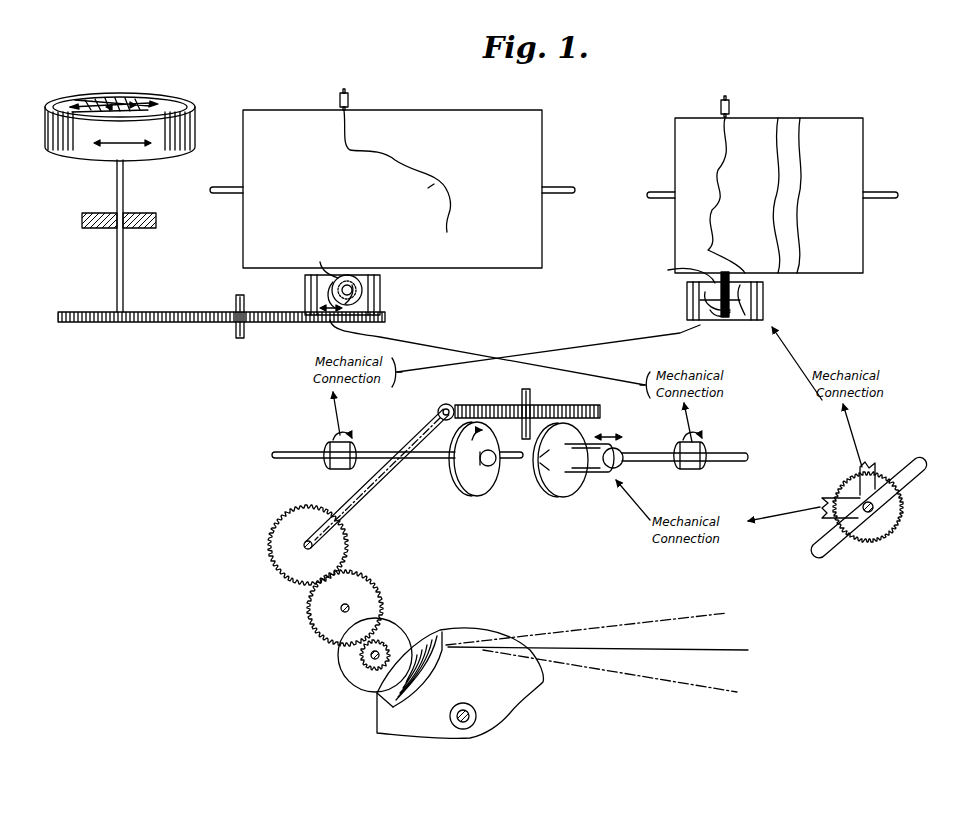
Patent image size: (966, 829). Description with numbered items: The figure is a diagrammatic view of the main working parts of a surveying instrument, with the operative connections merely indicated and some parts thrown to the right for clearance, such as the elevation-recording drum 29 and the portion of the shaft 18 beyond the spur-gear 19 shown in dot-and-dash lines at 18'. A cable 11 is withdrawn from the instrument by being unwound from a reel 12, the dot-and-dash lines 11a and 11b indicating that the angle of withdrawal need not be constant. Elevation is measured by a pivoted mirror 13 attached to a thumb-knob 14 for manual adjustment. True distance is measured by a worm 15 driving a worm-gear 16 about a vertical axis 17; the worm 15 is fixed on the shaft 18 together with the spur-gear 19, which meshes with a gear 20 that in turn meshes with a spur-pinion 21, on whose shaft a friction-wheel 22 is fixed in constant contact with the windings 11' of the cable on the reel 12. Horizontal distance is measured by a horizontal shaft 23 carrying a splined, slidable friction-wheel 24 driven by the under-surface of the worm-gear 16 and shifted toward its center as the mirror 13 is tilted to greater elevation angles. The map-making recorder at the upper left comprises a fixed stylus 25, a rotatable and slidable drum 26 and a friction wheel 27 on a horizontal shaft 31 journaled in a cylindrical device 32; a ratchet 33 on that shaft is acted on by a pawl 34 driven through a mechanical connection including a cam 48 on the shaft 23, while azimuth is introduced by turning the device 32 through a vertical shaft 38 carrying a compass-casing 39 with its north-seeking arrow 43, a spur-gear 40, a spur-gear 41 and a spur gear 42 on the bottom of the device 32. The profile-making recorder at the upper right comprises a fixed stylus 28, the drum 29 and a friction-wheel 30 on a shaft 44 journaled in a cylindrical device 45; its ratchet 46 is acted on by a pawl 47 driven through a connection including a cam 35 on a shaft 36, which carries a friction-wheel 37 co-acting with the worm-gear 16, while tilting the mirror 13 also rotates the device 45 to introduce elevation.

The cable 11 is at (617, 624).
The dot-and-dash line 11a is at (600, 628).
The dot-and-dash line 11b is at (612, 672).
The windings of the cable 11' is at (352, 723).
The reel 12 is at (493, 700).
The pivoted mirror 13 is at (905, 476).
The thumb-knob 14 is at (878, 540).
The worm 15 is at (452, 408).
The worm-gear 16 is at (600, 408).
The vertical axis 17 is at (531, 393).
The shaft 18 is at (377, 469).
The part of shaft shown in dot-and-dash lines 18' is at (400, 515).
The spur-gear 19 is at (283, 550).
The gear 20 is at (320, 614).
The spur-pinion 21 is at (358, 660).
The friction-wheel 22 is at (400, 642).
The horizontal shaft 23 is at (650, 452).
The friction-wheel 24 is at (552, 490).
The fixed stylus 25 is at (350, 90).
The drum 26 is at (472, 125).
The friction wheel 27 is at (320, 262).
The fixed stylus 28 is at (730, 102).
The drum 29 is at (803, 133).
The friction-wheel 30 is at (681, 273).
The horizontal shaft 31 is at (362, 290).
The cylindrical device 32 is at (383, 300).
The ratchet 33 is at (352, 280).
The pawl 34 is at (333, 295).
The cam 35 is at (352, 448).
The shaft 36 is at (425, 470).
The friction-wheel 37 is at (478, 490).
The vertical shaft 38 is at (117, 262).
The compass-casing 39 is at (86, 150).
The spur-gear 40 is at (142, 322).
The spur-gear 41 is at (236, 325).
The spur gear 42 is at (318, 322).
The north-seeking arrow 43 is at (142, 103).
The shaft 44 is at (735, 320).
The cylindrical device 45 is at (760, 303).
The ratchet 46 is at (722, 288).
The pawl 47 is at (700, 310).
The cam 48 is at (702, 450).